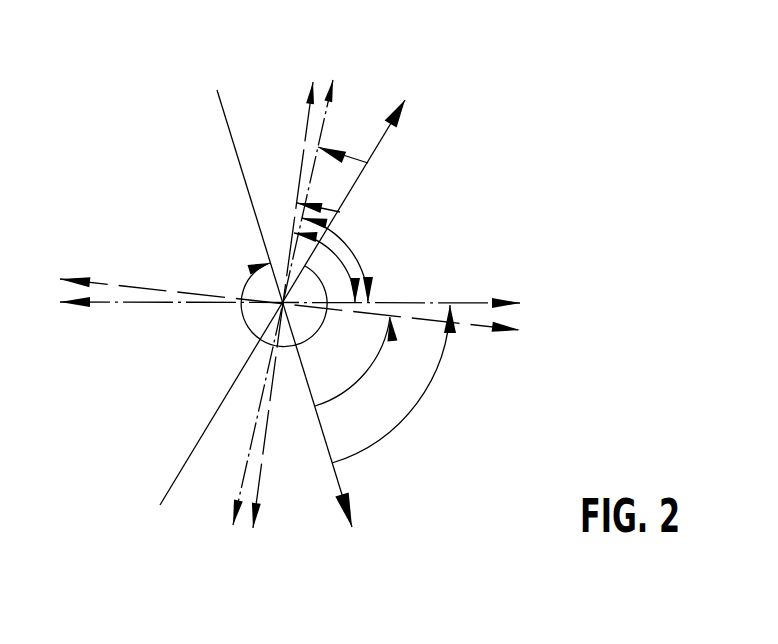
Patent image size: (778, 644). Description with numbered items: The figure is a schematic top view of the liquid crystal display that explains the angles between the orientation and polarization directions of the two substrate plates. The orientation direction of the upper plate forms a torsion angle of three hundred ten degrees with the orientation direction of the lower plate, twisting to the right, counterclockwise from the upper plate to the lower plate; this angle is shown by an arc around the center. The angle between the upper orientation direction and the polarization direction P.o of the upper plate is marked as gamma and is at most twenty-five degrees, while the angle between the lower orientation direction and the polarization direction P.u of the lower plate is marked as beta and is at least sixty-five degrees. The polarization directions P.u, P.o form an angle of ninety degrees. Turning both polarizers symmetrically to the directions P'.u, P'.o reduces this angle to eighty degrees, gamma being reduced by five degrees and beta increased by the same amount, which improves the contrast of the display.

The polarization direction on the upper plate P.o is at (311, 106).
The turned polarization direction on the upper plate P'.o is at (300, 269).
The polarization direction on the lower plate P.u is at (497, 330).
The turned polarization direction on the lower plate P'.u is at (326, 277).